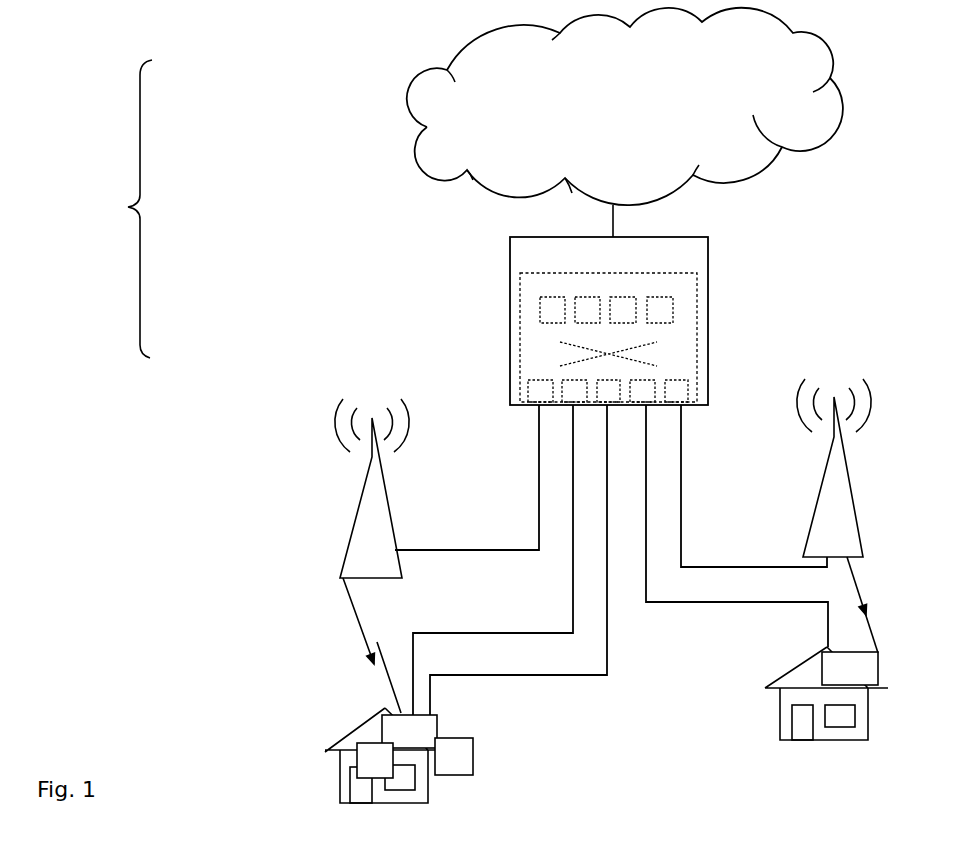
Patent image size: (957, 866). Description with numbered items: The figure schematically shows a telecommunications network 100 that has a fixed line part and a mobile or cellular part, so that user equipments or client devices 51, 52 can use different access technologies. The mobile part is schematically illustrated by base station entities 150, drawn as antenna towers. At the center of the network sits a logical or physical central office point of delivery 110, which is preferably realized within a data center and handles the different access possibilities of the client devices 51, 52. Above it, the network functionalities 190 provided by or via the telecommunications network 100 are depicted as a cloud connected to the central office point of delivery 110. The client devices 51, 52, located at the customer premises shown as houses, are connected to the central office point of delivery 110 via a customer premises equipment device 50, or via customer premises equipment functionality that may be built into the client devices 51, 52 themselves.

The telecommunications network 100 is at (116, 209).
The network functionalities 190 is at (625, 122).
The central office point of delivery 110 is at (609, 321).
The base station entity 150 is at (603, 478).
The customer premises equipment device 50 is at (630, 700).
The client device 51 is at (454, 756).
The client device 52 is at (375, 760).